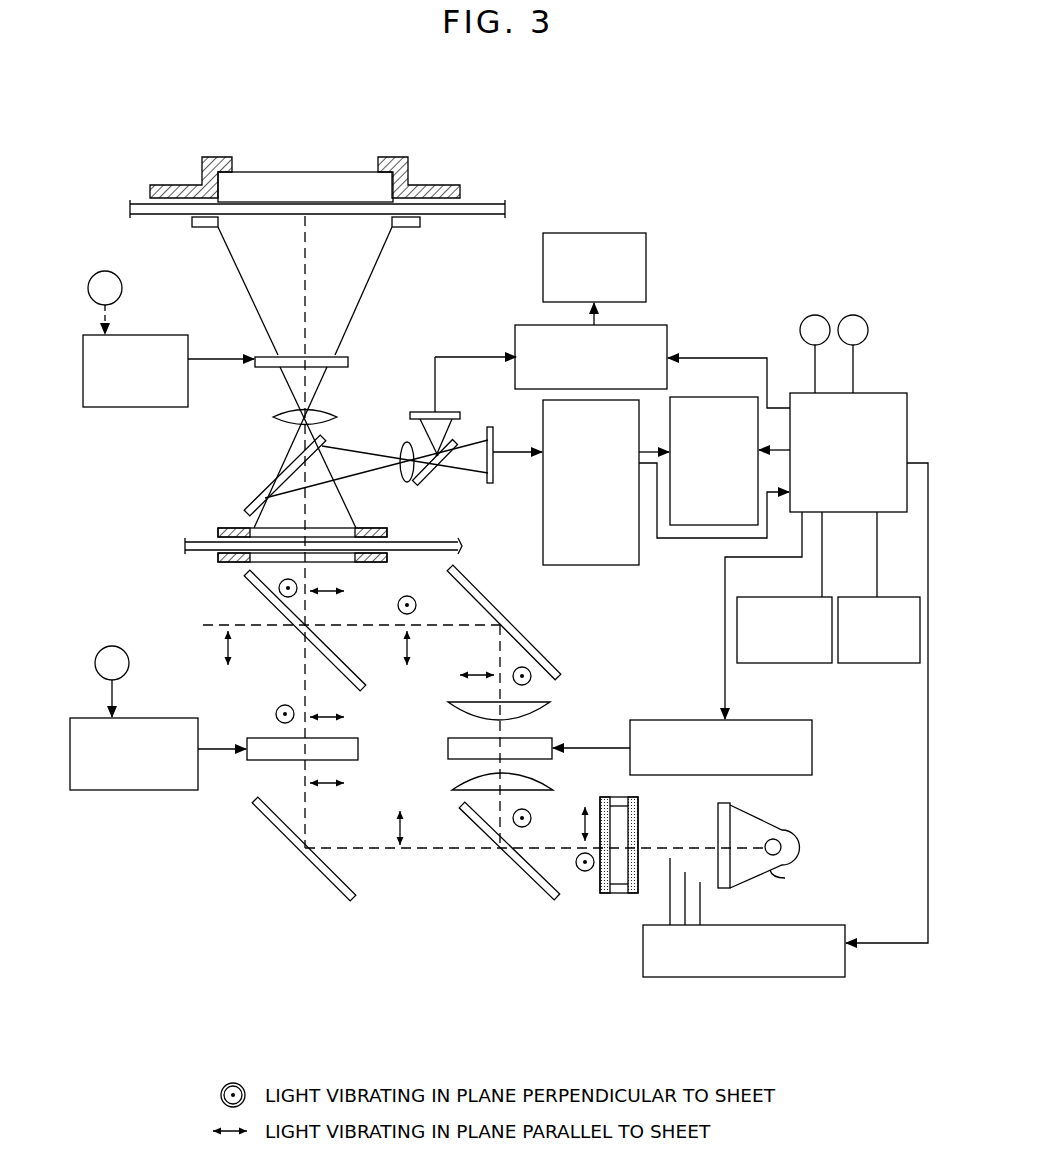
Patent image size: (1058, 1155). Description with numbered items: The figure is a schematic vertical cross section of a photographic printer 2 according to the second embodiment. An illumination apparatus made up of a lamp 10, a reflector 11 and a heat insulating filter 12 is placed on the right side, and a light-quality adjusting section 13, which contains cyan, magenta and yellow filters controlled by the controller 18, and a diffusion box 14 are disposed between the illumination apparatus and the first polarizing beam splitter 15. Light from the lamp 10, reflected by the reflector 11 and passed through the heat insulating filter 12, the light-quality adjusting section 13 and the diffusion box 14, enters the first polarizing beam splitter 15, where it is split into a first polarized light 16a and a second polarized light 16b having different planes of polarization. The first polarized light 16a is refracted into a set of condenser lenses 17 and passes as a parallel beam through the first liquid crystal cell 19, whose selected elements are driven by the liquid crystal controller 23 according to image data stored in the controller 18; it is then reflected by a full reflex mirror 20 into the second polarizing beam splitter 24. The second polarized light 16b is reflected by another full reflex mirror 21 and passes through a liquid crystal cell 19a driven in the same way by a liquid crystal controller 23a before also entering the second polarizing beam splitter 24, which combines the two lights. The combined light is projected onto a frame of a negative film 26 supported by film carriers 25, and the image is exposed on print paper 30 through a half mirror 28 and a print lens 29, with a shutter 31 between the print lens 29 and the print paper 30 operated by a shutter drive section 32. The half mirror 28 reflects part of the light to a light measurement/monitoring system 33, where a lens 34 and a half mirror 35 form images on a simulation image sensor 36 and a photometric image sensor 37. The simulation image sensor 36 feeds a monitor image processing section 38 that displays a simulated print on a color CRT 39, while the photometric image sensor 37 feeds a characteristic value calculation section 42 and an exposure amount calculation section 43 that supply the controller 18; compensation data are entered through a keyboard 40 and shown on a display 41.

The photographic printer 2 is at (170, 893).
The lamp 10 is at (790, 830).
The reflector 11 is at (770, 873).
The heat insulating filter 12 is at (718, 812).
The light-quality adjusting section 13 is at (775, 977).
The diffusion box 14 is at (615, 893).
The first polarizing beam splitter 15 is at (535, 880).
The first polarized light 16a is at (505, 805).
The second polarized light 16b is at (425, 850).
The condenser lenses 17 is at (552, 712).
The controller 18 is at (877, 395).
The first liquid crystal cell 19 is at (448, 748).
The liquid crystal cell 19a is at (255, 760).
The full reflex mirror 20 is at (548, 665).
The full reflex mirror 21 is at (325, 875).
The liquid crystal controller 23 is at (812, 745).
The liquid crystal controller 23a is at (110, 790).
The second polarizing beam splitter 24 is at (365, 683).
The film carrier 25 is at (235, 530).
The negative film 26 is at (200, 541).
The half mirror 28 is at (255, 505).
The print lens 29 is at (330, 415).
The print paper 30 is at (480, 200).
The shutter 31 is at (355, 357).
The shutter drive section 32 is at (118, 407).
The light measurement/monitoring system 33 is at (490, 343).
The lens 34 is at (402, 478).
The half mirror 35 is at (432, 477).
The simulation image sensor 36 is at (450, 412).
The photometric image sensor 37 is at (494, 468).
The monitor image processing section 38 is at (652, 325).
The color CRT 39 is at (600, 233).
The keyboard 40 is at (777, 663).
The display 41 is at (888, 663).
The characteristic value calculation section 42 is at (543, 546).
The exposure amount calculation section 43 is at (735, 397).